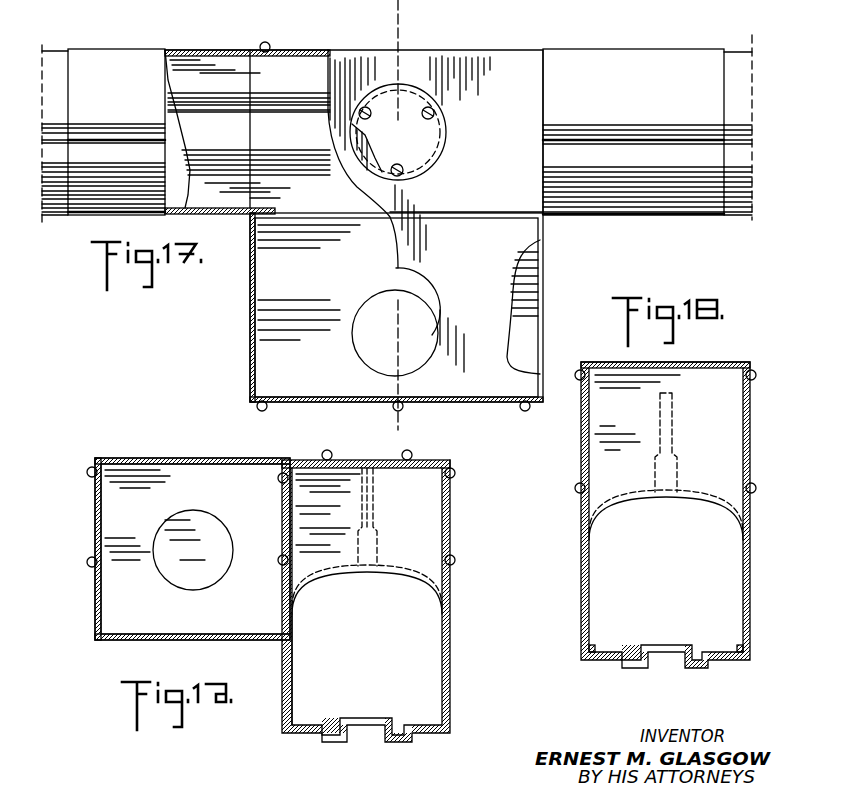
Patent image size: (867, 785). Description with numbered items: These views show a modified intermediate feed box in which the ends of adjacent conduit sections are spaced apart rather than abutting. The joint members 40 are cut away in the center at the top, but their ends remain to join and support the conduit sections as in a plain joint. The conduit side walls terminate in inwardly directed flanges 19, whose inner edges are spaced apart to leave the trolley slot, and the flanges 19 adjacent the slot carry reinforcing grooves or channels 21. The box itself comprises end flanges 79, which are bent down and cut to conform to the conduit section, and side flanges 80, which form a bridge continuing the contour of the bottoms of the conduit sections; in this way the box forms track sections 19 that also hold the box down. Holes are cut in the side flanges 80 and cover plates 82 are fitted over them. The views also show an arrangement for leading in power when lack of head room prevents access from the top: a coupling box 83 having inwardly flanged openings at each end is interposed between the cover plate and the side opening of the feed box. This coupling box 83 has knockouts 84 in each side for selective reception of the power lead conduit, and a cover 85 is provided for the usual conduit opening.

In FIG. 17, the flanges 19 is at (213, 77).
In FIG. 19, the flanges 19 is at (415, 735).
In FIG. 18, the flanges 19 is at (610, 658).
In FIG. 17, the reinforcing grooves 21 is at (210, 103).
In FIG. 17, the joint members 40 is at (131, 0).
In FIG. 19, the end flanges 79 is at (410, 555).
In FIG. 18, the end flanges 79 is at (703, 472).
In FIG. 19, the side flanges 80 is at (442, 665).
In FIG. 19, the cover plates 82 is at (450, 583).
In FIG. 18, the cover plates 82 is at (581, 447).
In FIG. 19, the coupling box 83 is at (115, 586).
In FIG. 17, the knockouts 84 is at (258, 298).
In FIG. 19, the knockouts 84 is at (178, 590).
In FIG. 17, the cover 85 is at (446, 143).
In FIG. 19, the cover 85 is at (357, 458).